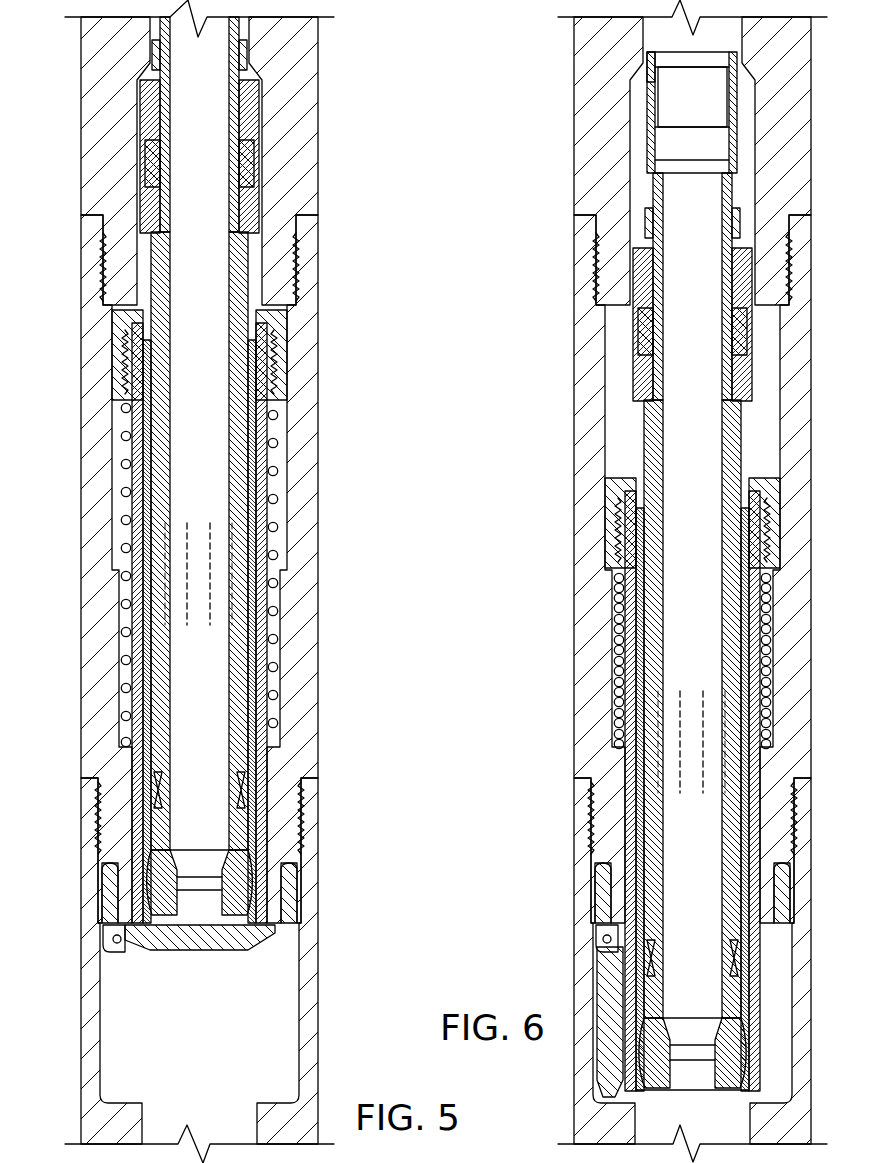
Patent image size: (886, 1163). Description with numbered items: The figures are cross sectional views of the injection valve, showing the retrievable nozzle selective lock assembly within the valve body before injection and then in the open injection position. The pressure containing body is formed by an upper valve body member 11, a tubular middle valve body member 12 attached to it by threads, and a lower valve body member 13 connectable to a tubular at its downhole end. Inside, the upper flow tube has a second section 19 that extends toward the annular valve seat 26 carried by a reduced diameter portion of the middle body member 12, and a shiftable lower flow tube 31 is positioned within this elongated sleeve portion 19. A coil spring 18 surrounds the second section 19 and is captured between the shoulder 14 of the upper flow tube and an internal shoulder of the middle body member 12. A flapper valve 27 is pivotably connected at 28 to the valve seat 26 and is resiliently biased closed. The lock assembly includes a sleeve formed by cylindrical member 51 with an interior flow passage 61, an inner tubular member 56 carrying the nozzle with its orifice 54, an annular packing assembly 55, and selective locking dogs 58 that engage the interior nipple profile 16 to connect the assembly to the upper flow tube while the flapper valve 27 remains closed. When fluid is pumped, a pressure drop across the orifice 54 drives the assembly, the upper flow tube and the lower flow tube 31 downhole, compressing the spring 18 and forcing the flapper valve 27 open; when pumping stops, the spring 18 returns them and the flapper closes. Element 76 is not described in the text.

In FIG. 6, the upper valve body member 11 is at (574, 68).
In FIG. 5, the tubular middle valve body member 12 is at (81, 520).
In FIG. 6, the tubular middle valve body member 12 is at (574, 445).
In FIG. 5, the lower valve body member 13 is at (81, 965).
In FIG. 6, the lower valve body member 13 is at (574, 845).
In FIG. 5, the shoulder of the upper flow tube 14 is at (118, 395).
In FIG. 6, the shoulder of the upper flow tube 14 is at (607, 575).
In FIG. 5, the interior nipple profile 16 is at (158, 148).
In FIG. 5, the coil spring 18 is at (126, 606).
In FIG. 6, the coil spring 18 is at (618, 688).
In FIG. 5, the second section of the upper flow tube 19 is at (135, 478).
In FIG. 6, the second section of the upper flow tube 19 is at (627, 767).
In FIG. 5, the annular valve seat 26 is at (112, 903).
In FIG. 6, the annular valve seat 26 is at (600, 898).
In FIG. 5, the flapper valve 27 is at (243, 945).
In FIG. 6, the flapper valve 27 is at (603, 1035).
In FIG. 5, the pivot connection 28 is at (113, 940).
In FIG. 6, the pivot connection 28 is at (604, 940).
In FIG. 5, the shiftable lower flow tube 31 is at (250, 786).
In FIG. 6, the shiftable lower flow tube 31 is at (745, 958).
In FIG. 6, the cylindrical member 51 is at (732, 93).
In FIG. 5, the orifice 54 is at (203, 885).
In FIG. 6, the orifice 54 is at (688, 1053).
In FIG. 5, the annular packing assembly 55 is at (242, 786).
In FIG. 6, the annular packing assembly 55 is at (733, 958).
In FIG. 5, the inner tubular member 56 is at (192, 595).
In FIG. 6, the inner tubular member 56 is at (665, 765).
In FIG. 5, the selective locking dogs 58 is at (148, 160).
In FIG. 6, the selective locking dogs 58 is at (645, 330).
In FIG. 6, the interior flow passage 61 is at (692, 97).
In FIG. 6, the mandrel head wall 76 is at (660, 98).